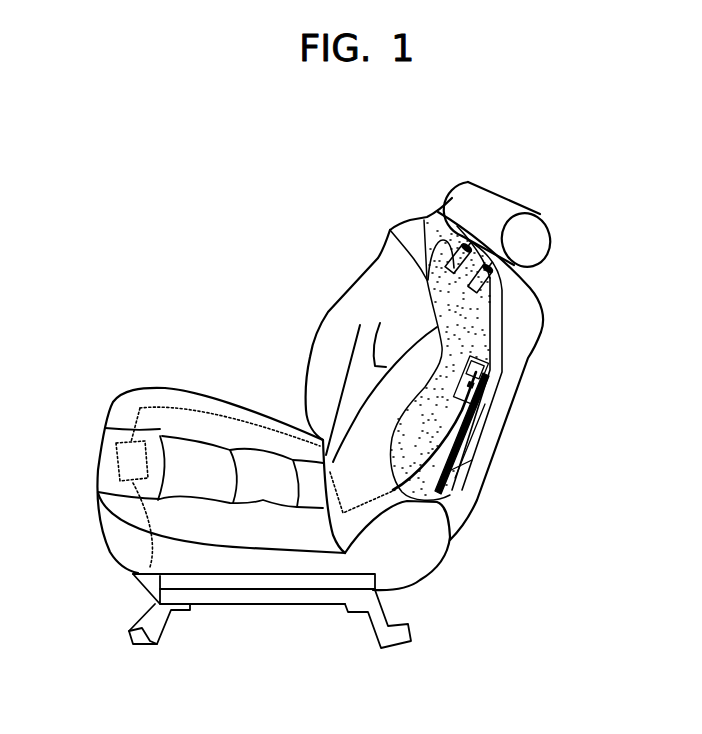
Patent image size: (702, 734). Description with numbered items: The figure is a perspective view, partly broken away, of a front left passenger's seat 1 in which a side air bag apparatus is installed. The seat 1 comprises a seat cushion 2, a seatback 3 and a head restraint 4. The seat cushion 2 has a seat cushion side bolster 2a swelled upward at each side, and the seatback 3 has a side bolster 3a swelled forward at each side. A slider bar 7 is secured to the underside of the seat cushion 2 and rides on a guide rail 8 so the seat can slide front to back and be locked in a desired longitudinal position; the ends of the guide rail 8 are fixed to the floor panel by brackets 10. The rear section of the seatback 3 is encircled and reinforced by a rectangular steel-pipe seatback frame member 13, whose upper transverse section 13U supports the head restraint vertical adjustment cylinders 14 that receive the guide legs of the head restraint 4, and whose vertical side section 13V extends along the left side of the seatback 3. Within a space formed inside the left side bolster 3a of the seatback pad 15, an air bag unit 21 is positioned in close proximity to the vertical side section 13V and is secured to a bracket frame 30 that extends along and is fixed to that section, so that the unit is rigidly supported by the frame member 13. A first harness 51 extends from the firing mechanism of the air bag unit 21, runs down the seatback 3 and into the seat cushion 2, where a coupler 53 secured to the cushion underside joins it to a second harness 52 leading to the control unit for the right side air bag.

The seat 1 is at (503, 596).
The seat cushion 2 is at (116, 397).
The seat cushion side bolster 2a is at (172, 393).
The seatback 3 is at (332, 314).
The seatback side bolster 3a is at (312, 357).
The head restraint 4 is at (542, 216).
The slider bar 7 is at (247, 580).
The guide rail 8 is at (325, 600).
The bracket 10 is at (135, 645).
The seatback frame member 13 is at (503, 360).
The upper transverse section 13U is at (500, 296).
The vertical side section 13V is at (498, 358).
The head restraint vertical adjustment cylinder 14 is at (460, 244).
The seatback pad 15 is at (390, 231).
The air bag unit 21 is at (490, 392).
The bracket frame 30 is at (452, 466).
The first harness 51 is at (455, 445).
The second harness 52 is at (145, 524).
The coupler 53 is at (108, 456).